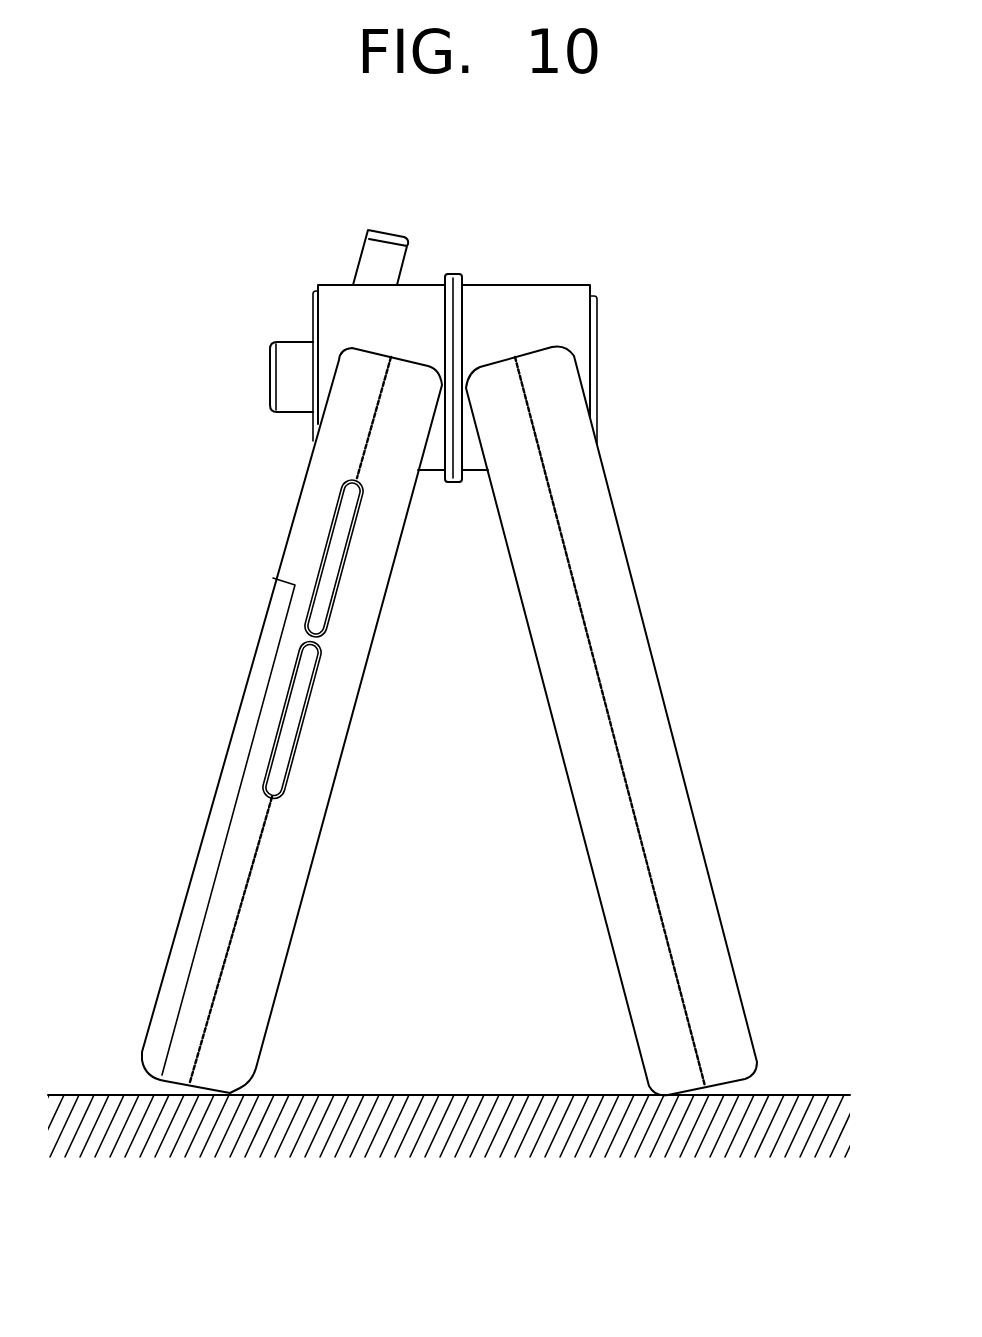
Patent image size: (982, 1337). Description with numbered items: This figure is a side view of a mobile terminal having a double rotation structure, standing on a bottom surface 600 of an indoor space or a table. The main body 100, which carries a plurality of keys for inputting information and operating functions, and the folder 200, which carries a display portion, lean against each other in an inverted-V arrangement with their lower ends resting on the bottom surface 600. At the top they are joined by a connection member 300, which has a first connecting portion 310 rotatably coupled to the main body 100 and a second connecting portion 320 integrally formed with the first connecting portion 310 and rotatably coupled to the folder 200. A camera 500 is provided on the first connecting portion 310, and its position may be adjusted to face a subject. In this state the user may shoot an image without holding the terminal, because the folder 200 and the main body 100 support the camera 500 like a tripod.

The main body 100 is at (218, 693).
The folder 200 is at (690, 695).
The connection member 300 is at (480, 260).
The first connecting portion 310 is at (332, 323).
The second connecting portion 320 is at (577, 325).
The camera 500 is at (283, 380).
The bottom surface 600 is at (818, 1112).